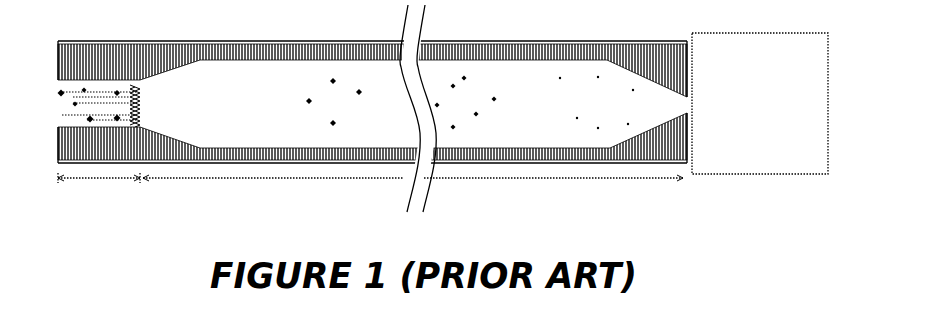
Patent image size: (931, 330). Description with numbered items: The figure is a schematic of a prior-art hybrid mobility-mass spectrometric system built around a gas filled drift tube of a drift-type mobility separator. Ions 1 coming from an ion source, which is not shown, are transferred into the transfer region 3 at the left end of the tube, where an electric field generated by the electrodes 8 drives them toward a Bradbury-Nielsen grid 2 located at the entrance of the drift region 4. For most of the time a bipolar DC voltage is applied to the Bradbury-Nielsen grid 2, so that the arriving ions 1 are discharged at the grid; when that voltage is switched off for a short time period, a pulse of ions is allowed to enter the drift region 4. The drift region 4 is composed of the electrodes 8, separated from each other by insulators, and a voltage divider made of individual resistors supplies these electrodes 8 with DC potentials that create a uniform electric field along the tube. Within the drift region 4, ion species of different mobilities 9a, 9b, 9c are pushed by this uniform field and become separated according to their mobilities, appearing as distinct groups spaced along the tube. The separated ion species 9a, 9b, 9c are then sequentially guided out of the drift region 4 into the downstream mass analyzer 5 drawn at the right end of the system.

The ions 1 is at (90, 105).
The Bradbury-Nielsen grid 2 is at (141, 103).
The transfer region 3 is at (99, 185).
The drift region 4 is at (413, 187).
The mass analyzer 5 is at (760, 103).
The electrodes 8 is at (365, 102).
The ion species of a first mobility 9a is at (334, 102).
The ion species of a second mobility 9b is at (466, 103).
The ion species of a third mobility 9c is at (596, 102).